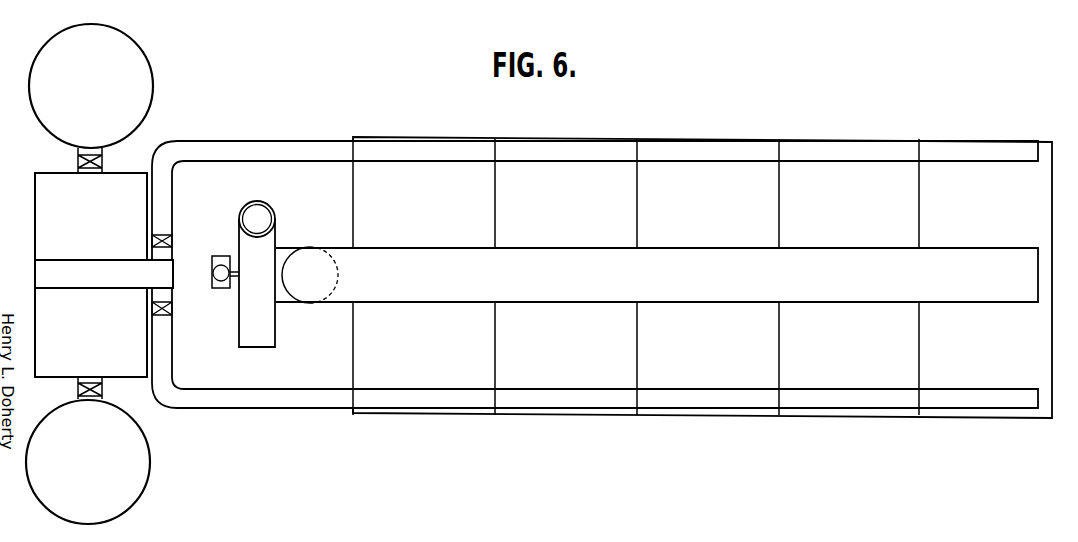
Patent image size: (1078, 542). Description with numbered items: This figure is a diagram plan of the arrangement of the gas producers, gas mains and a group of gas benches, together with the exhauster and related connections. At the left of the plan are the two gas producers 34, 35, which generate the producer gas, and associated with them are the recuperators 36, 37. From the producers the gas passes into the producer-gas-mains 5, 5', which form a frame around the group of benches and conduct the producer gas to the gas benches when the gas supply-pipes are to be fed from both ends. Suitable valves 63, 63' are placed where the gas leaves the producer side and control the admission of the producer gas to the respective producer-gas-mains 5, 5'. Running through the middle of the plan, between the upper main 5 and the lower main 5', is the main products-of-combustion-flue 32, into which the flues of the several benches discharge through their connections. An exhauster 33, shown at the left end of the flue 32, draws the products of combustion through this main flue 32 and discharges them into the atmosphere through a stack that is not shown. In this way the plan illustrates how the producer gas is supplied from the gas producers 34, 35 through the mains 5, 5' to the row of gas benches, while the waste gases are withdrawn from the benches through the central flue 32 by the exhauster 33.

The gas producer 34 is at (91, 86).
The gas producer 35 is at (88, 462).
The recuperator 36 is at (91, 216).
The recuperator 37 is at (91, 332).
The producer-gas-main 5 is at (595, 200).
The producer-gas-main 5' is at (595, 348).
The main products-of-combustion-flue 32 is at (657, 275).
The exhauster 33 is at (243, 274).
The valve 63 is at (177, 239).
The valve 63' is at (180, 311).